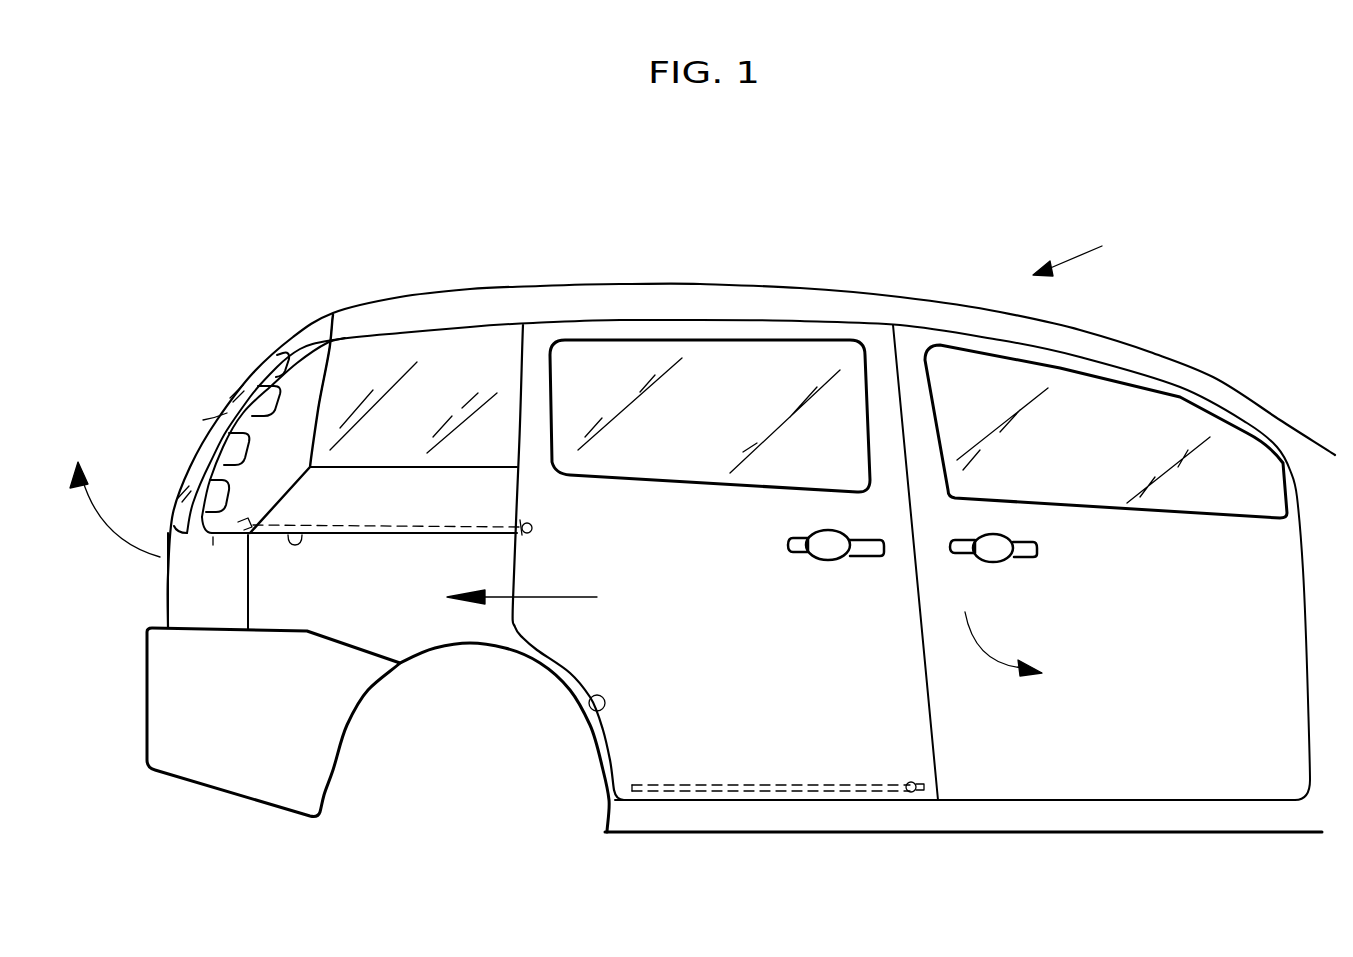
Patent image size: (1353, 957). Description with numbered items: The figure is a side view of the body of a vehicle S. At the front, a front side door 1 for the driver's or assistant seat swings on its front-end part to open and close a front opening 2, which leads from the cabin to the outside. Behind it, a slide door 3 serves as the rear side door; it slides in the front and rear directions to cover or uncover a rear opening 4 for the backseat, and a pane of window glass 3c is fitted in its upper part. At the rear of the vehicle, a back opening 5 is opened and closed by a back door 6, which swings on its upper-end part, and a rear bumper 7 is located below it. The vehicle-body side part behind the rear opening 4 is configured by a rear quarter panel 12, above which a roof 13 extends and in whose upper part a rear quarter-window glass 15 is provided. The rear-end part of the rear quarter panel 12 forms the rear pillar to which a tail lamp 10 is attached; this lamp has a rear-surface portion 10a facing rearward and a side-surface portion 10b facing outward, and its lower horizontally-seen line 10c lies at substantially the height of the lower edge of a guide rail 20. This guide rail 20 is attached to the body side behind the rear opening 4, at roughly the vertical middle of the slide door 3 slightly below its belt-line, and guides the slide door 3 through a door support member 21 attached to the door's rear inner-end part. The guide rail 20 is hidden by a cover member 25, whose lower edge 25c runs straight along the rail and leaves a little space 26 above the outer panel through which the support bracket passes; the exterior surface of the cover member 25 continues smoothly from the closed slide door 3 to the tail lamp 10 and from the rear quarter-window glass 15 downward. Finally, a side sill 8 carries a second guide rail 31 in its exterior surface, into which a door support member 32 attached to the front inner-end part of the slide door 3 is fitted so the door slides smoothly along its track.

The front side door 1 is at (1065, 753).
The front opening 2 is at (1167, 797).
The slide door 3 is at (682, 748).
The window glass 3c is at (763, 370).
The rear opening 4 is at (591, 718).
The back opening 5 is at (333, 325).
The back door 6 is at (178, 576).
The rear bumper 7 is at (222, 752).
The side sill 8 is at (885, 818).
The tail lamp 10 is at (283, 372).
The rear-surface portion 10a is at (233, 413).
The side-surface portion 10b is at (307, 393).
The lower horizontally-seen line 10c is at (217, 537).
The rear quarter panel 12 is at (333, 603).
The roof 13 is at (607, 287).
The rear quarter-window glass 15 is at (428, 357).
The guide rail 20 is at (405, 522).
The door support member 21 is at (532, 530).
The cover member 25 is at (398, 487).
The lower edge 25c is at (297, 537).
The space 26 is at (361, 538).
The guide rail 31 is at (770, 786).
The door support member 32 is at (905, 784).
The vehicle S is at (1135, 251).